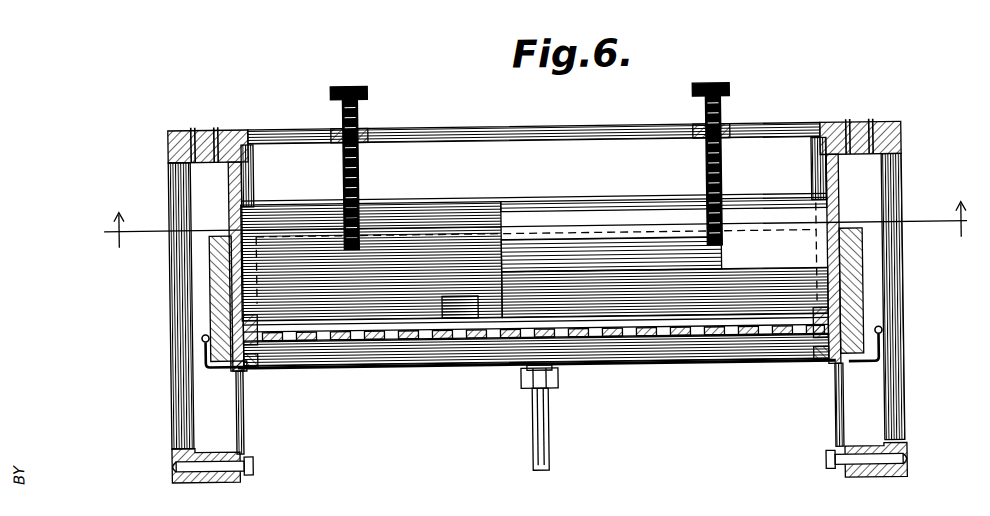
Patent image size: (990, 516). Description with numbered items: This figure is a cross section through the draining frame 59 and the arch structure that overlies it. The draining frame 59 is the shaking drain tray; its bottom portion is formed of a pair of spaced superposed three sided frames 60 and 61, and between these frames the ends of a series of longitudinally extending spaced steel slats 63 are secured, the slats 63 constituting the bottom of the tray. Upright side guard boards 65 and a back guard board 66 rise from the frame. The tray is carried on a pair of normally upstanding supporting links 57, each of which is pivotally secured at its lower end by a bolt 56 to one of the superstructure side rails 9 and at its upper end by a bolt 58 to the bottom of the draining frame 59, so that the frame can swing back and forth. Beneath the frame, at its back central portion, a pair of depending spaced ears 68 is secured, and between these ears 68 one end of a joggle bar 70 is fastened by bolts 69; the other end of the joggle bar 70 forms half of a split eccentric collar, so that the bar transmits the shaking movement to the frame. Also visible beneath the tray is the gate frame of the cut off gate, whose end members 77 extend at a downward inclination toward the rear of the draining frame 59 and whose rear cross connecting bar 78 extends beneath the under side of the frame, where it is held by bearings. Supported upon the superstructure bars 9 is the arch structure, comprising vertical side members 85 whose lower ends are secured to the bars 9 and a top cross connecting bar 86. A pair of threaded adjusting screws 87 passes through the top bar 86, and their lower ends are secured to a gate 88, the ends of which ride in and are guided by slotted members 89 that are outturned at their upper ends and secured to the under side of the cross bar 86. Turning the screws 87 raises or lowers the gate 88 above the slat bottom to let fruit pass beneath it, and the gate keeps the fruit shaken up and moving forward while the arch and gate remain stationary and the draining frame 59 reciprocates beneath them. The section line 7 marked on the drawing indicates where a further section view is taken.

The section line 7- 7 is at (523, 225).
The parallel bars 9 is at (222, 483).
The bolts 56 is at (252, 466).
The supporting links 57 is at (243, 433).
The bolts 58 is at (254, 370).
The draining frame 59 is at (199, 266).
The three sided frame 60 is at (824, 308).
The three sided frame 61 is at (236, 386).
The steel slats 63 is at (462, 343).
The side guard boards 65 is at (458, 320).
The back guard board 66 is at (214, 292).
The depending ears 68 is at (536, 394).
The bolts 69 is at (522, 380).
The joggle bar 70 is at (532, 445).
The end members 77 is at (200, 345).
The rear cross connecting bar 78 is at (660, 372).
The vertical side members 85 is at (178, 382).
The top cross connecting bar 86 is at (492, 131).
The threaded adjusting screws 87 is at (362, 128).
The gate 88 is at (612, 212).
The slotted members 89 is at (250, 192).